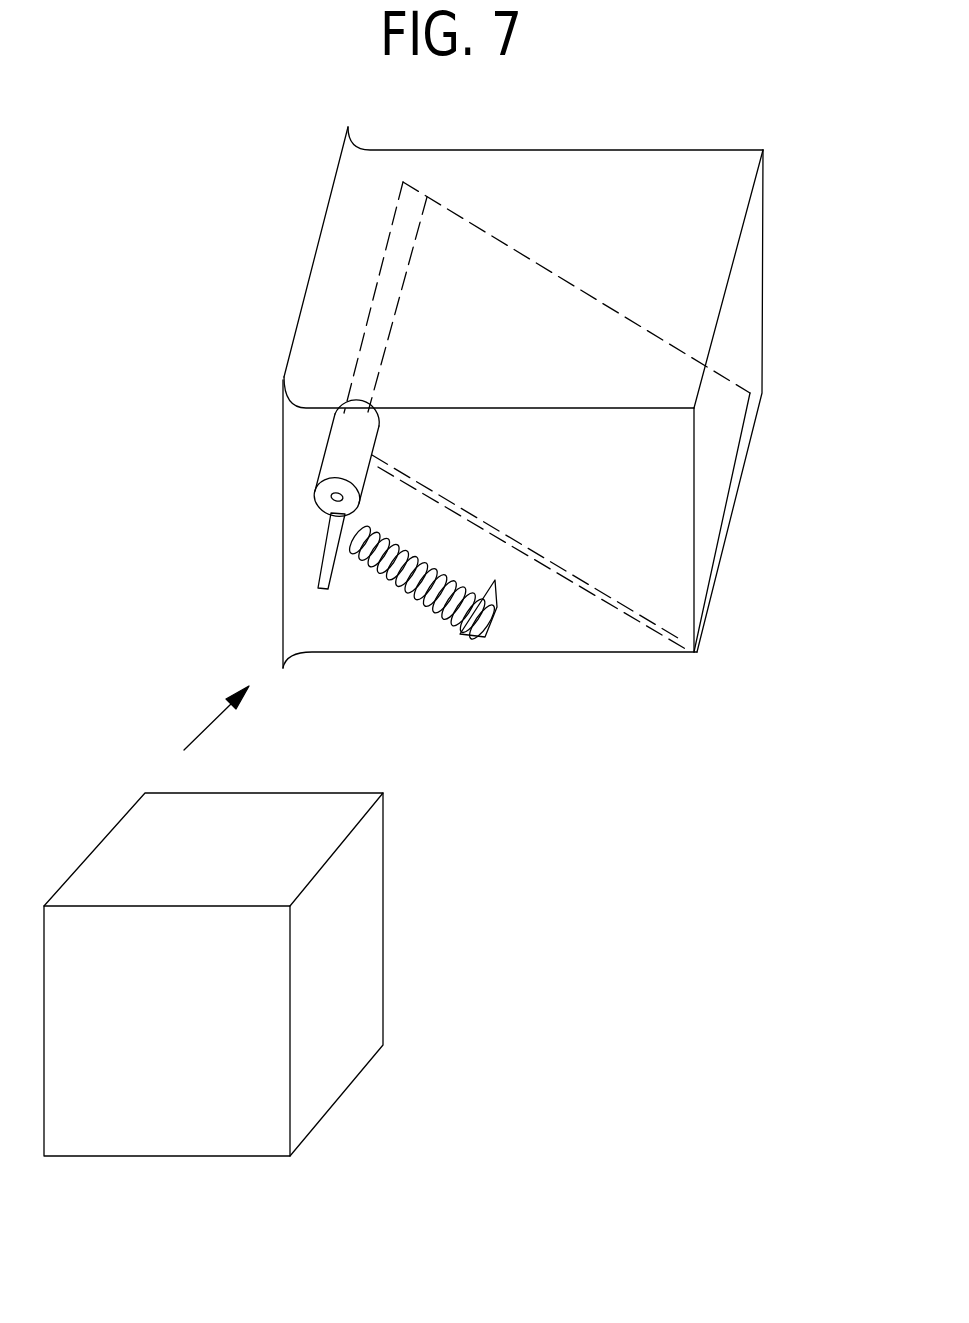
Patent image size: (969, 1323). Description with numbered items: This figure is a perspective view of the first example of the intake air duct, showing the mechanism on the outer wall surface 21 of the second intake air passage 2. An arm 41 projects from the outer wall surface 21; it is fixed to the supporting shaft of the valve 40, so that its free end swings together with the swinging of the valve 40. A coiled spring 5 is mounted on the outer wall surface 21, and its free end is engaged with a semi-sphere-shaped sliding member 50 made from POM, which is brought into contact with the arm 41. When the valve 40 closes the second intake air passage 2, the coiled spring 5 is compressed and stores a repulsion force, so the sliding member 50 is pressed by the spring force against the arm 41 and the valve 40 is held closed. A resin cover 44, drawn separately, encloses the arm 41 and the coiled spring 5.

The second intake air passage 2 is at (656, 160).
The valve 40 is at (712, 463).
The outer wall surface 21 is at (665, 547).
The arm 41 is at (325, 547).
The sliding member 50 is at (353, 547).
The coiled spring 5 is at (412, 585).
The cover 44 is at (358, 922).